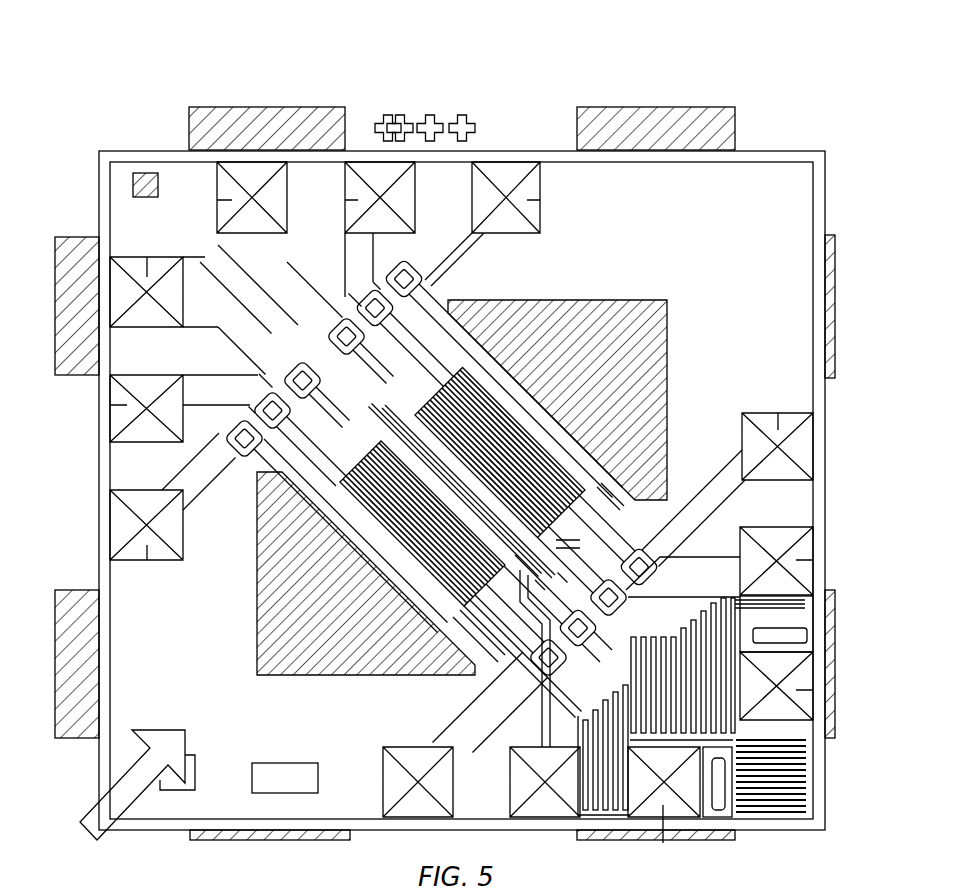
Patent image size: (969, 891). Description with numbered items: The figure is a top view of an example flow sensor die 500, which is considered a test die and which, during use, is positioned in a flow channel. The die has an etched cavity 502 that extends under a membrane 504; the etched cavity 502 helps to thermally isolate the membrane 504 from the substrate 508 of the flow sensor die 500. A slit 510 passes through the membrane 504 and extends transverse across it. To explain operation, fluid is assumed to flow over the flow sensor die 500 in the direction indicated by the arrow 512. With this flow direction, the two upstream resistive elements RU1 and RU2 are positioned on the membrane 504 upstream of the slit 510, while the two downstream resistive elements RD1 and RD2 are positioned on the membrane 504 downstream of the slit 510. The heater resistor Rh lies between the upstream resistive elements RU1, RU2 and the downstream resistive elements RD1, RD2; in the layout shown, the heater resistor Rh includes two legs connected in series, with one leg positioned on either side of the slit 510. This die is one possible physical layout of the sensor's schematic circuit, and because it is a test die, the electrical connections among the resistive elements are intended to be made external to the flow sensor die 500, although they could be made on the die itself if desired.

The flow sensor die 500 is at (822, 22).
The etched cavity 502 is at (641, 300).
The membrane 504 is at (480, 368).
The substrate 508 is at (792, 199).
The slit 510 is at (559, 542).
The arrow 512 is at (93, 803).
The downstream resistive element RD1 is at (458, 355).
The downstream resistive element RD2 is at (443, 342).
The upstream resistive element RU1 is at (318, 500).
The upstream resistive element RU2 is at (330, 482).
The heater resistor Rh is at (338, 384).